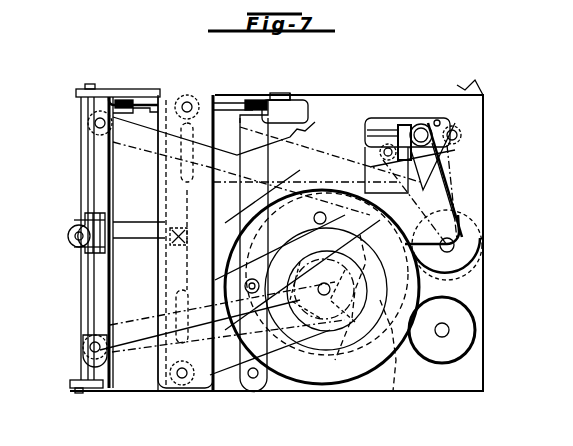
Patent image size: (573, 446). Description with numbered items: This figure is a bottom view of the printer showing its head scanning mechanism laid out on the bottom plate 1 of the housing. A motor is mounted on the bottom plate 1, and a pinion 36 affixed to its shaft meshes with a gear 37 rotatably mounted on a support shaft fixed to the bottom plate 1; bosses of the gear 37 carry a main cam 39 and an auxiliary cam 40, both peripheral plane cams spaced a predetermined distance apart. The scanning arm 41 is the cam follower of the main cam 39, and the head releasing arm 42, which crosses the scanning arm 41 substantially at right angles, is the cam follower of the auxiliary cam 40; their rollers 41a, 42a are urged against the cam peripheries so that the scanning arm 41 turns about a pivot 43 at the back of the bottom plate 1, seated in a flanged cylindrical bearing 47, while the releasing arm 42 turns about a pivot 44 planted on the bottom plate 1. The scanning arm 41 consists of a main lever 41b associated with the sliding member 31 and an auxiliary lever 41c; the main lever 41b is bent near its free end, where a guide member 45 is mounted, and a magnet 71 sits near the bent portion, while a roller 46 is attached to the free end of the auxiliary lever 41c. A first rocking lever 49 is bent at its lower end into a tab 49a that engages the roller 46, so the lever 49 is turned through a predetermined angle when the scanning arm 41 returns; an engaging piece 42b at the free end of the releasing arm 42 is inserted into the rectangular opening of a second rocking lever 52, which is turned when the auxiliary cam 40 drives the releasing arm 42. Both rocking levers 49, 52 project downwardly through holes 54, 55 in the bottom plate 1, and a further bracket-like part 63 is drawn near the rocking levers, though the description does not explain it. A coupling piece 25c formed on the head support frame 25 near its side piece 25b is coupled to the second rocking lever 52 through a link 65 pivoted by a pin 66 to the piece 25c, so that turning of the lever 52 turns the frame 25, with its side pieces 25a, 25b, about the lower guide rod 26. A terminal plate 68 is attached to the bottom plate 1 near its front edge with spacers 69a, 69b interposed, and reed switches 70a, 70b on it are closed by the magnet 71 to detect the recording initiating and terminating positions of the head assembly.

The bottom plate 1 is at (289, 248).
The head support frame 25 is at (119, 378).
The side piece 25a is at (95, 378).
The side piece 25b is at (118, 72).
The coupling piece 25c is at (133, 87).
The lower guide rod 26 is at (77, 242).
The sliding member 31 is at (65, 189).
The pinion 36 is at (461, 333).
The gear 37 is at (327, 307).
The main cam 39 is at (370, 328).
The auxiliary cam 40 is at (322, 306).
The scanning arm 41 is at (447, 184).
The roller 41a is at (260, 251).
The main lever 41b is at (255, 182).
The auxiliary lever 41c is at (447, 156).
The head releasing arm 42 is at (226, 128).
The roller 42a is at (217, 274).
The engaging piece 42b is at (258, 179).
The pivot 43 is at (463, 245).
The pivot 44 is at (251, 361).
The guide member 45 is at (66, 233).
The roller 46 is at (445, 102).
The flanged cylindrical bearing 47 is at (463, 259).
The first rocking lever 49 is at (415, 110).
The tab 49a is at (362, 145).
The second rocking lever 52 is at (272, 85).
The hole 54 is at (475, 77).
The hole 55 is at (297, 90).
The guide bracket 63 is at (407, 126).
The link 65 is at (212, 219).
The pin 66 is at (83, 132).
The terminal plate 68 is at (139, 254).
The spacer 69a is at (194, 391).
The spacer 69b is at (198, 89).
The reed switch 70a is at (153, 316).
The reed switch 70b is at (159, 242).
The magnet 71 is at (157, 213).